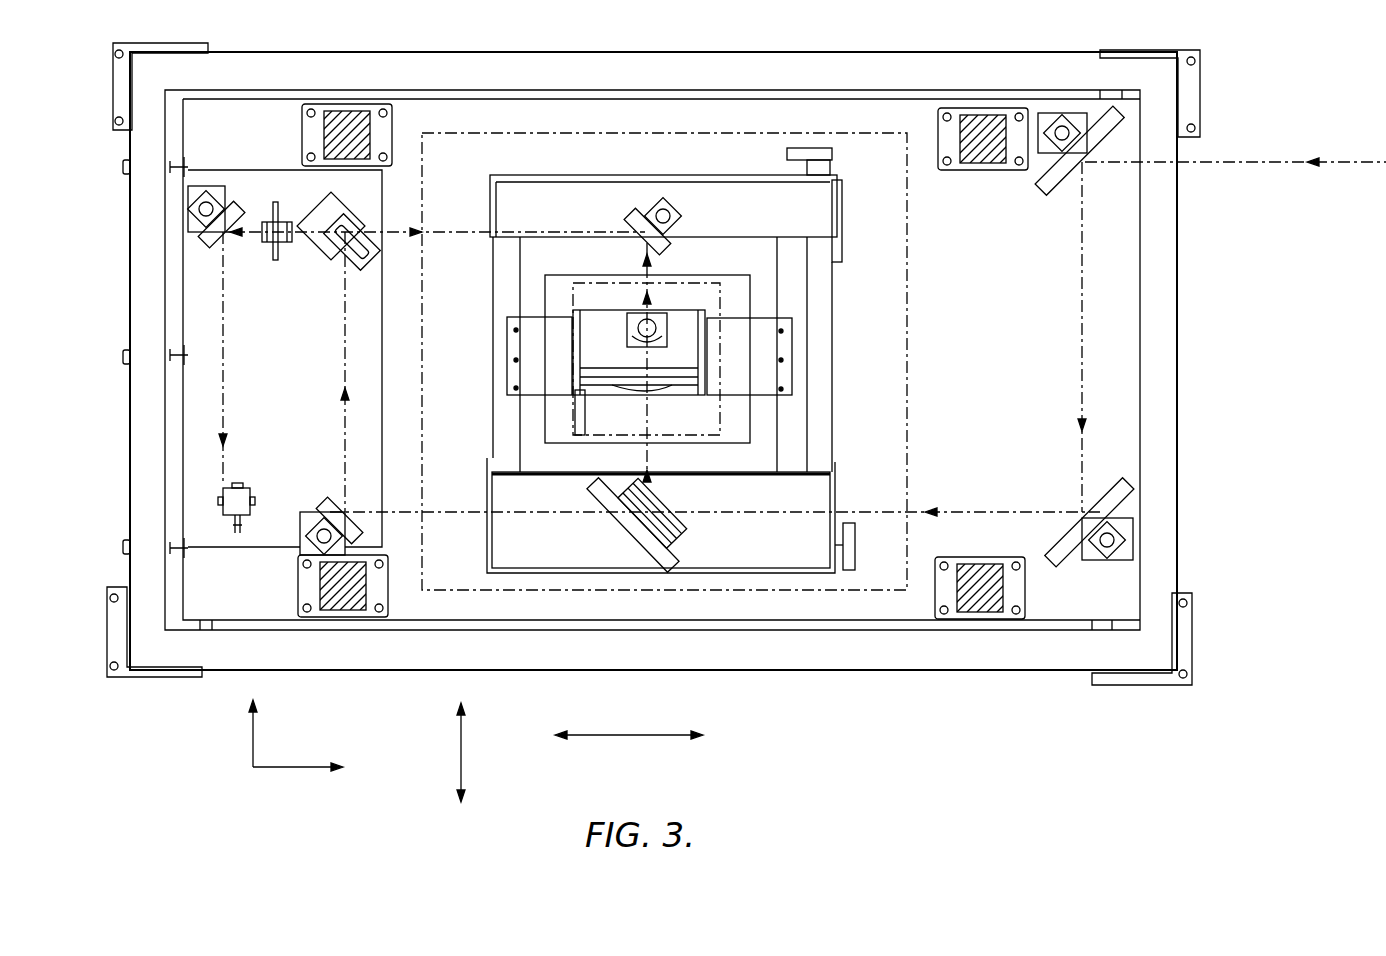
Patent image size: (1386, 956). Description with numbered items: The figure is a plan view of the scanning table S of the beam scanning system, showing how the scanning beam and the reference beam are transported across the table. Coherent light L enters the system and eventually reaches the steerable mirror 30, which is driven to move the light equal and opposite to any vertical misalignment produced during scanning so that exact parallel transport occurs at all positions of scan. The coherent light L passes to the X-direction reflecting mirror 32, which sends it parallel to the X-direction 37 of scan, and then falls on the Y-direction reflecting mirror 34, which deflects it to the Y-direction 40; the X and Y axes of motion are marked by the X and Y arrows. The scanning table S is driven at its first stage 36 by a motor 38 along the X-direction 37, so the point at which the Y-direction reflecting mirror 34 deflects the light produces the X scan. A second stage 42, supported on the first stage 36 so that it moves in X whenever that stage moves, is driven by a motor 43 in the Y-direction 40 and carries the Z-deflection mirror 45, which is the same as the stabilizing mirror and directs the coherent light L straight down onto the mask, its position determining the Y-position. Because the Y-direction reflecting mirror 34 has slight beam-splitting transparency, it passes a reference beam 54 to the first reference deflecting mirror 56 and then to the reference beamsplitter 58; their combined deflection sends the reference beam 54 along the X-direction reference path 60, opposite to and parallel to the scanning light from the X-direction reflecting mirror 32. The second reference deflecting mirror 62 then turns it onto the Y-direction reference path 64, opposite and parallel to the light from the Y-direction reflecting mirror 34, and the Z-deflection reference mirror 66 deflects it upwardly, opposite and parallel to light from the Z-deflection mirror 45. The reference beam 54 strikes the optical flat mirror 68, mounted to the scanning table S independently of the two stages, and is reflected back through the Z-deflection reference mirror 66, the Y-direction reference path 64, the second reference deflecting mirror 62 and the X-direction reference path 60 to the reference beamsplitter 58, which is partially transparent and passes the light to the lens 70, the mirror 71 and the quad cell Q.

The scanning table S is at (487, 52).
The coherent light L is at (1333, 160).
The mirror 71 is at (205, 236).
The lens 70 is at (278, 215).
The reference beamsplitter 58 is at (327, 262).
The X-direction reference path 60 is at (395, 232).
The second reference deflecting mirror 62 is at (673, 200).
The motor 43 is at (820, 151).
The first stage 36 is at (842, 225).
The Y-direction reference path 64 is at (662, 268).
The second stage 42 is at (772, 352).
The Z-deflection reference mirror 66 is at (630, 331).
The Z-deflection mirror 45 is at (648, 388).
The steerable mirror 30 is at (686, 387).
The optical flat mirror 68 is at (610, 438).
The reference beam 54 is at (462, 515).
The motor 38 is at (857, 545).
The Y-direction reflecting mirror 34 is at (672, 565).
The X-direction reflecting mirror 32 is at (1062, 552).
The first reference deflecting mirror 56 is at (320, 515).
The quad cell Q is at (215, 503).
The Y-direction 40 is at (460, 748).
The X-direction 37 is at (655, 735).
The X axis X is at (310, 784).
The Y axis Y is at (242, 733).